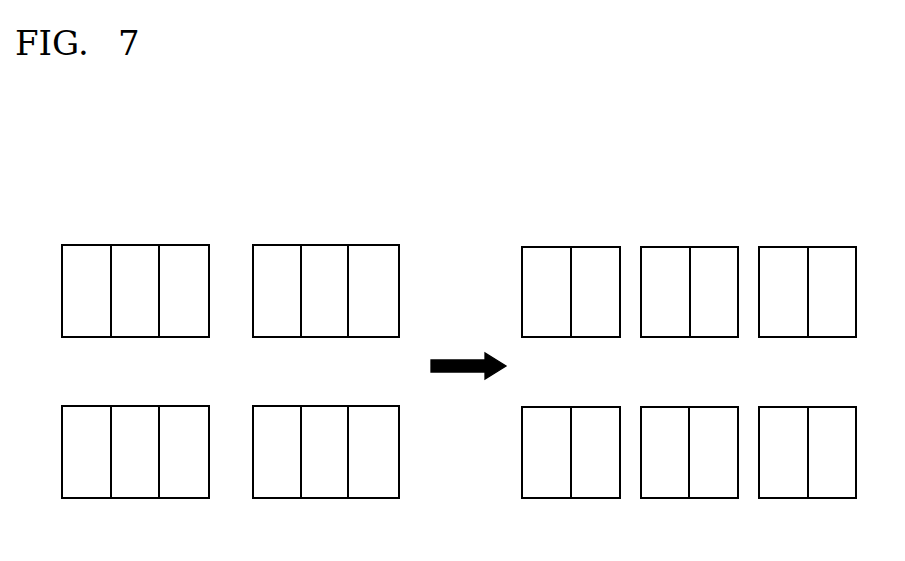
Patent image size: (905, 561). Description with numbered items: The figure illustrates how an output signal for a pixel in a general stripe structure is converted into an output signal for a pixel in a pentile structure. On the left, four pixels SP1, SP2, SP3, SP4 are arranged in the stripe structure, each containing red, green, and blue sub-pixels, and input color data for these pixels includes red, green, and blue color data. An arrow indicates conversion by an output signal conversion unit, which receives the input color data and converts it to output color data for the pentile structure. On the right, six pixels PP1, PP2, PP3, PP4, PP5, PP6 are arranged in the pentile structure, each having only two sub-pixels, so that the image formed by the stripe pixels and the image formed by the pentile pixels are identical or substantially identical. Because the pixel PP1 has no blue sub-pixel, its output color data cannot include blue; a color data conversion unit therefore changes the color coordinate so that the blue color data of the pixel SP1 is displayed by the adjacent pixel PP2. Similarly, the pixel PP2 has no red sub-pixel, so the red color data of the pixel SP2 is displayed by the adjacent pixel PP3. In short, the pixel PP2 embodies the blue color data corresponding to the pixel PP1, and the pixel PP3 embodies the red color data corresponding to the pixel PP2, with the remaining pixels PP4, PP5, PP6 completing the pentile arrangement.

The pixel SP1 is at (138, 245).
The pixel SP2 is at (328, 245).
The pixel SP3 is at (138, 406).
The pixel SP4 is at (328, 406).
The pixel PP1 is at (543, 247).
The pixel PP2 is at (668, 247).
The pixel PP3 is at (787, 247).
The pixel PP4 is at (548, 407).
The pixel PP5 is at (668, 407).
The pixel PP6 is at (787, 407).